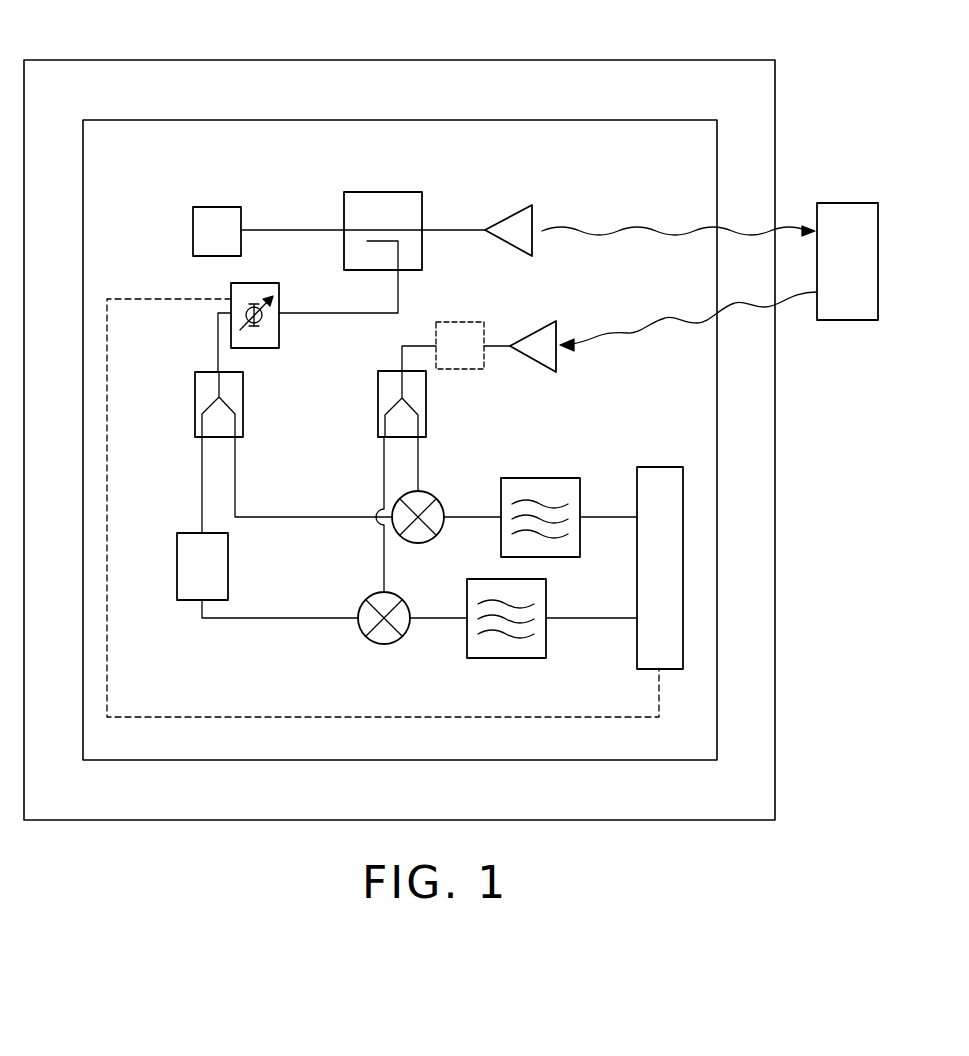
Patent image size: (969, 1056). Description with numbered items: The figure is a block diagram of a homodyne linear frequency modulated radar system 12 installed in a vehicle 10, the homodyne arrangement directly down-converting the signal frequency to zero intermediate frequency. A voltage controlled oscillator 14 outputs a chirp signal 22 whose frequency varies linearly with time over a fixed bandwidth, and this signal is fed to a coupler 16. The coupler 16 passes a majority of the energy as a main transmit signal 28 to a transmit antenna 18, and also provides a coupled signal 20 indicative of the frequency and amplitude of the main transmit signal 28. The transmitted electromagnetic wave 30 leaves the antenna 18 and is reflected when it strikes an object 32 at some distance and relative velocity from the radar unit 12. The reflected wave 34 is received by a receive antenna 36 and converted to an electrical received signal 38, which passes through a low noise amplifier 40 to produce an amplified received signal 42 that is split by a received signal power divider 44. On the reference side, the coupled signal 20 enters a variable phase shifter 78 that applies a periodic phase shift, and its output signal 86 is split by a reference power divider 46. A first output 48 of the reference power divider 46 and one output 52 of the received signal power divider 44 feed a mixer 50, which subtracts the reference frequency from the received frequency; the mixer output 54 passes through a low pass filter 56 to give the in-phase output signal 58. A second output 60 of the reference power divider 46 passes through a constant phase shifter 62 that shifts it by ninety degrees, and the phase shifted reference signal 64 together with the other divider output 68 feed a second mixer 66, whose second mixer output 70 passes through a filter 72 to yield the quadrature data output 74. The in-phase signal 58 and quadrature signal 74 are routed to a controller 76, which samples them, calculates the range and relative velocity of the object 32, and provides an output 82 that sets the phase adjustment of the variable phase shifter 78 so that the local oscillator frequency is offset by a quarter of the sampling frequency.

The vehicle 10 is at (400, 60).
The homodyne radar system 12 is at (400, 120).
The voltage controlled oscillator 14 is at (218, 207).
The coupler 16 is at (385, 192).
The transmit antenna 18 is at (505, 219).
The coupled signal 20 is at (345, 313).
The chirp signal 22 is at (312, 229).
The main transmit signal 28 is at (433, 229).
The electromagnetic wave 30 is at (640, 224).
The object 32 is at (835, 203).
The reflected wave 34 is at (617, 335).
The receive antenna 36 is at (540, 322).
The received signal 38 is at (497, 345).
The low noise amplifier 40 is at (461, 322).
The amplified received signal 42 is at (420, 345).
The received signal power divider 44 is at (378, 405).
The reference power divider 46 is at (195, 405).
The first output of reference power divider 48 is at (235, 481).
The mixer 50 is at (418, 543).
The receive-based signal 52 is at (420, 457).
The mixer output 54 is at (487, 517).
The filter 56 is at (557, 478).
The in-phase output signal 58 is at (625, 517).
The second output of reference power divider 60 is at (202, 486).
The constant phase shifter 62 is at (177, 566).
The constant phase shifted reference signal 64 is at (287, 618).
The second mixer 66 is at (390, 644).
The output of received signal power divider 68 is at (383, 472).
The second mixer output 70 is at (420, 623).
The filter 72 is at (505, 658).
The quadrature data output 74 is at (580, 617).
The controller 76 is at (660, 467).
The variable phase shifter 78 is at (231, 290).
The controller output 82 is at (215, 717).
The output signal of phase shifter 86 is at (218, 345).